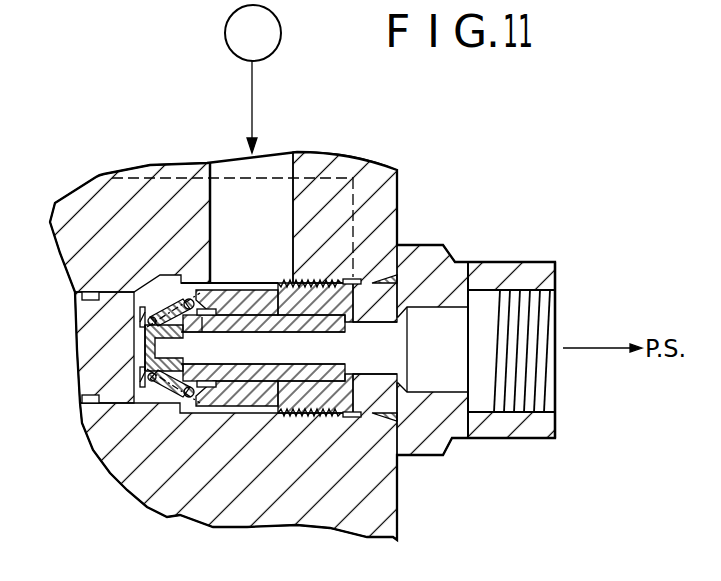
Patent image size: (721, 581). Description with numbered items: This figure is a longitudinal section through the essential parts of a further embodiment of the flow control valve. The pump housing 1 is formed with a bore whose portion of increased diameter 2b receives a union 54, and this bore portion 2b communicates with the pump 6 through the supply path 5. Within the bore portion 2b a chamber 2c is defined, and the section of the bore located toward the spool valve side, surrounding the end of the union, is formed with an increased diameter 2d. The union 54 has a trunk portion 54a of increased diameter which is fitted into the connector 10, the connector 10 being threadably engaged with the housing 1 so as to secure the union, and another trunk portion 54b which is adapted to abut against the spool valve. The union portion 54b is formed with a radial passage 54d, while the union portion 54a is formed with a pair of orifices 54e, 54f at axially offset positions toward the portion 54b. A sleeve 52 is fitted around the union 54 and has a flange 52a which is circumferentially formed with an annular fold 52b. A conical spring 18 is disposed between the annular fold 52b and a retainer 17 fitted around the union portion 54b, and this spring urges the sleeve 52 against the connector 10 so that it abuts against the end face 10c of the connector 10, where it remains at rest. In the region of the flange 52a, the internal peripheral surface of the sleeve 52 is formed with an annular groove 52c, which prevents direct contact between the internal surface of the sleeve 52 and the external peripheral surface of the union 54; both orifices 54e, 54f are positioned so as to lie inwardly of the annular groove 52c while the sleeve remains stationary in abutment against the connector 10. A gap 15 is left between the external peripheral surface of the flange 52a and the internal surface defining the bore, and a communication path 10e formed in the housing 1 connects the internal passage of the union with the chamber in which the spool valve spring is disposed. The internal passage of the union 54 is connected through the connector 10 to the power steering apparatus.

The pump housing 1 is at (367, 182).
The bore portion of increased diameter 2b is at (247, 403).
The chamber 2c is at (155, 407).
The increased diameter section 2d is at (137, 292).
The supply path 5 is at (207, 164).
The pump 6 is at (281, 38).
The connector 10 is at (472, 270).
The end face of the connector 10c is at (278, 283).
The communication path 10e is at (168, 177).
The gap 15 is at (207, 296).
The retainer 17 is at (139, 313).
The conical spring 18 is at (188, 301).
The sleeve 52 is at (224, 298).
The flange 52a is at (190, 405).
The annular fold 52b is at (197, 288).
The annular groove 52c is at (97, 418).
The union 54 is at (255, 312).
The trunk portion of increased diameter 54a is at (315, 404).
The trunk portion 54b is at (140, 350).
The radial passage 54d is at (141, 307).
The orifice 54e is at (203, 324).
The orifice 54f is at (210, 400).